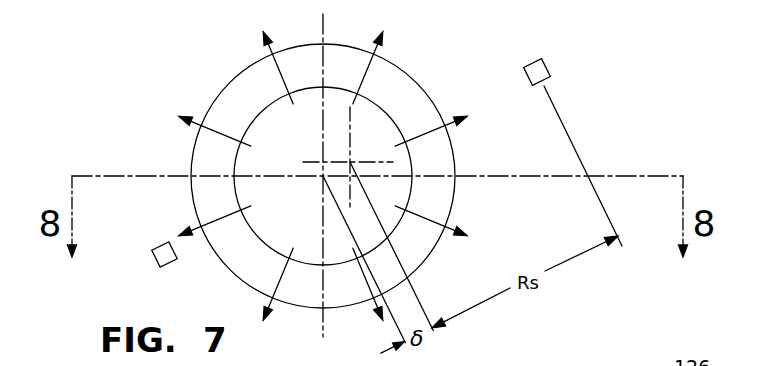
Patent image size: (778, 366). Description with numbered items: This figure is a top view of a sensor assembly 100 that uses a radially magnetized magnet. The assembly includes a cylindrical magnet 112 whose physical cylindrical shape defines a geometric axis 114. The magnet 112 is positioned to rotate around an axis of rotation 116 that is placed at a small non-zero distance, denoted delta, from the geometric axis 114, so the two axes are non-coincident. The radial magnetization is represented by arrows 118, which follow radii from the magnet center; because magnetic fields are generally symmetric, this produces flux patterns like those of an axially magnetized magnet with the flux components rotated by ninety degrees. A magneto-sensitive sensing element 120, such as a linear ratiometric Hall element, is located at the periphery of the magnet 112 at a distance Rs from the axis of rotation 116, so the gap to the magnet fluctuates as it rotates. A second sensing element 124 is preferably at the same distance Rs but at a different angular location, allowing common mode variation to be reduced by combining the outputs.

The sensor assembly 100 is at (187, 55).
The cylindrical magnet 112 is at (389, 74).
The geometric axis 114 is at (323, 176).
The axis of rotation 116 is at (350, 162).
The arrows 118 is at (220, 133).
The magneto-sensitive sensing element 120 is at (541, 66).
The sensing element 124 is at (153, 258).